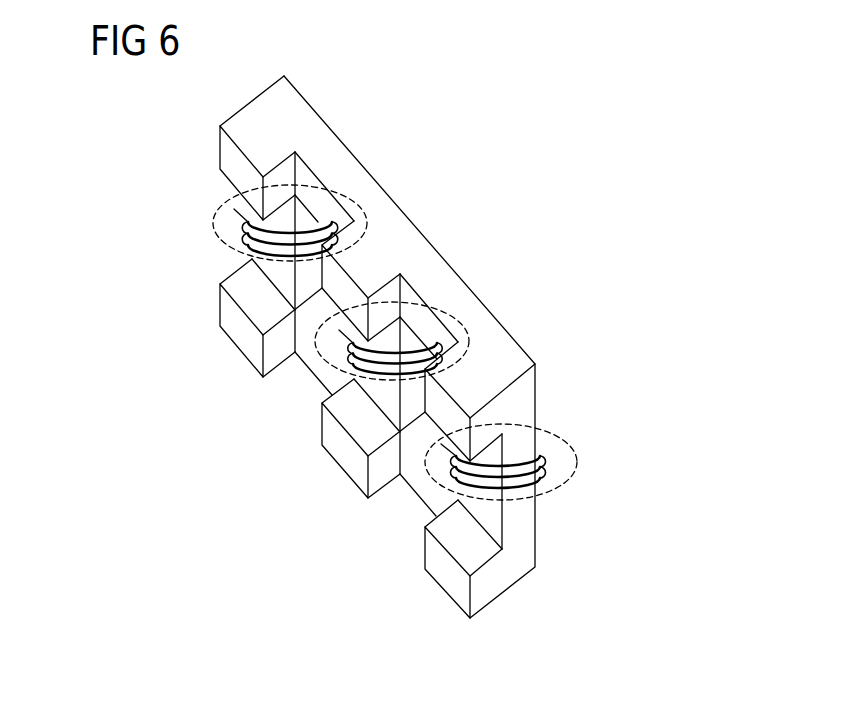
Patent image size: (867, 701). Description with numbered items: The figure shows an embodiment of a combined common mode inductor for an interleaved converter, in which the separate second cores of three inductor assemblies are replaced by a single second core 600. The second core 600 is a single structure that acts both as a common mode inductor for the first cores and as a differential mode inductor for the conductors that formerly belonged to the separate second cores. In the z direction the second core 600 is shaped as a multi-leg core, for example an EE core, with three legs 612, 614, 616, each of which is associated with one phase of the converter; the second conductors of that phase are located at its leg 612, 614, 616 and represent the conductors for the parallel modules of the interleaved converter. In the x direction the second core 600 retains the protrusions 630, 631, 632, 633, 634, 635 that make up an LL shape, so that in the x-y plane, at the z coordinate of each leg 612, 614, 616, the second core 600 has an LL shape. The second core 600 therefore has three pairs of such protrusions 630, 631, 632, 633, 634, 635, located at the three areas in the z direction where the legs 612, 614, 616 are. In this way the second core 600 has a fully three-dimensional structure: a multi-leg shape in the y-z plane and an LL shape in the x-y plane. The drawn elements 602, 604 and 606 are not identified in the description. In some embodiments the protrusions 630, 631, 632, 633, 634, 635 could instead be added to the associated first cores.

The second core 600 is at (377, 347).
The center post 602 is at (543, 433).
The center post 604 is at (443, 360).
The center post 606 is at (337, 238).
The leg 612 is at (519, 432).
The leg 614 is at (413, 315).
The leg 616 is at (311, 193).
The protrusion 630 is at (440, 439).
The protrusion 631 is at (430, 559).
The protrusion 632 is at (320, 318).
The protrusion 633 is at (341, 438).
The protrusion 634 is at (217, 148).
The protrusion 635 is at (231, 318).